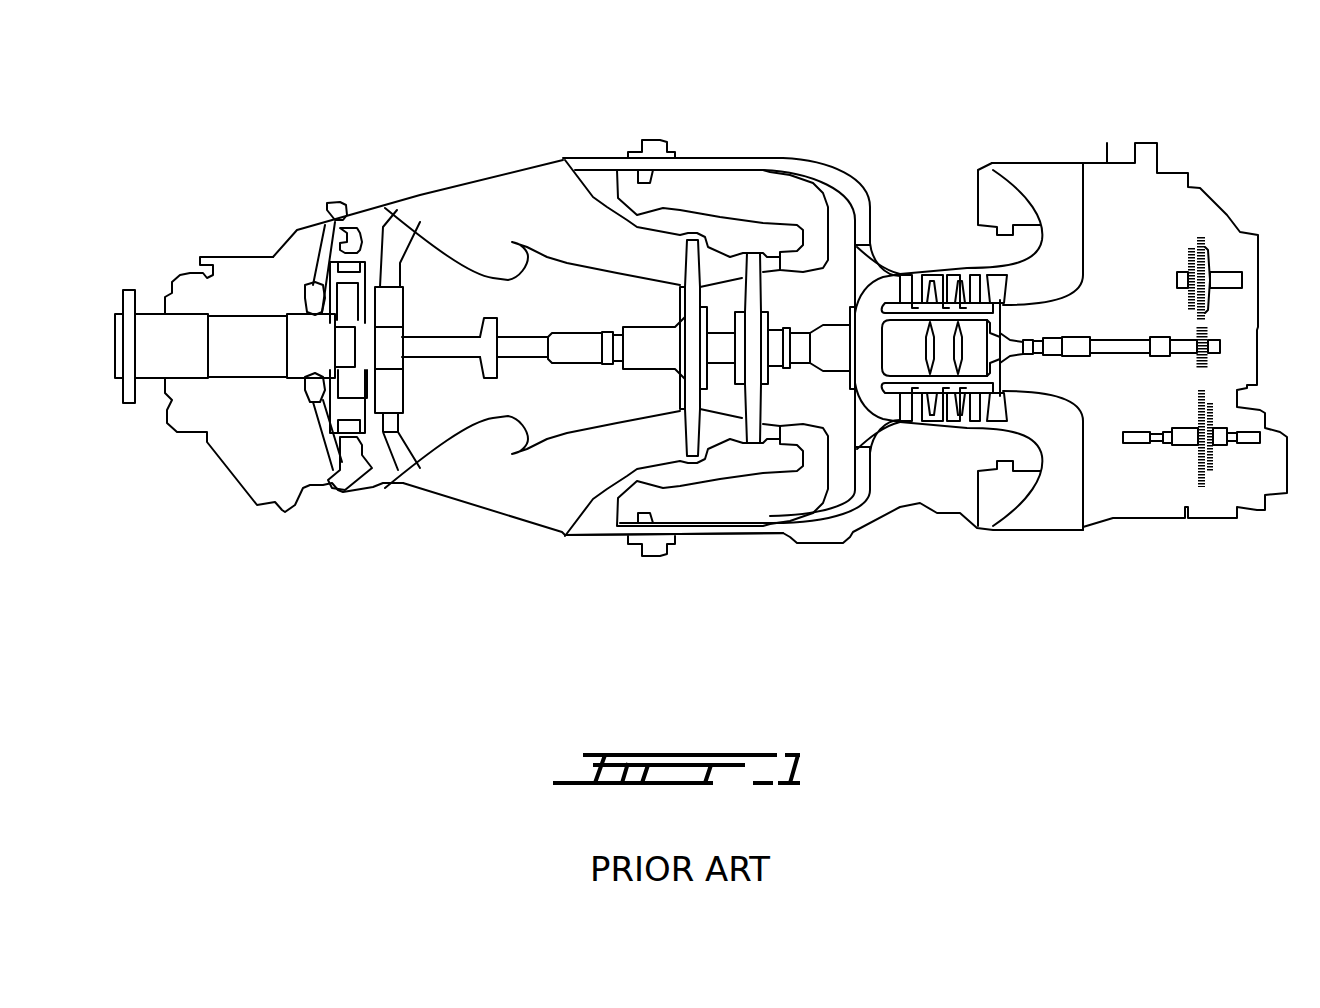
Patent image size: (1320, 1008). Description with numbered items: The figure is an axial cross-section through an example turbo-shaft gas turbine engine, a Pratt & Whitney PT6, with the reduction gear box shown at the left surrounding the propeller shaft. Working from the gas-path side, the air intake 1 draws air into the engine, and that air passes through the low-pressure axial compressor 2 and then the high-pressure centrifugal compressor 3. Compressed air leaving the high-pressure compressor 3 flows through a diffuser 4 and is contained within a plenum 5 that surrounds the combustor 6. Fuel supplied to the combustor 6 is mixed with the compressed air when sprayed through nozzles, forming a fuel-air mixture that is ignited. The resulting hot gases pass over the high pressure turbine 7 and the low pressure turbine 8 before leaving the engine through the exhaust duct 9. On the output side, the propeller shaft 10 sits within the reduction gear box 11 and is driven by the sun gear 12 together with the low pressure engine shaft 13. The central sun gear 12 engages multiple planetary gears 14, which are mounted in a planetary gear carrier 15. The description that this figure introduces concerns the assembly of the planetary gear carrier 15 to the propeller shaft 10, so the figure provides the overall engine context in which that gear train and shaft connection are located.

The air intake 1 is at (1052, 183).
The low-pressure axial compressor 2 is at (960, 283).
The high-pressure centrifugal compressor 3 is at (897, 252).
The diffuser 4 is at (850, 177).
The plenum 5 is at (733, 167).
The combustor 6 is at (690, 200).
The high pressure turbine 7 is at (748, 447).
The low pressure turbine 8 is at (688, 455).
The exhaust duct 9 is at (487, 210).
The propeller shaft 10 is at (152, 314).
The reduction gear box 11 is at (225, 256).
The sun gear 12 is at (373, 367).
The low pressure engine shaft 13 is at (568, 362).
The planetary gears 14 is at (337, 407).
The planetary gear carrier 15 is at (317, 307).